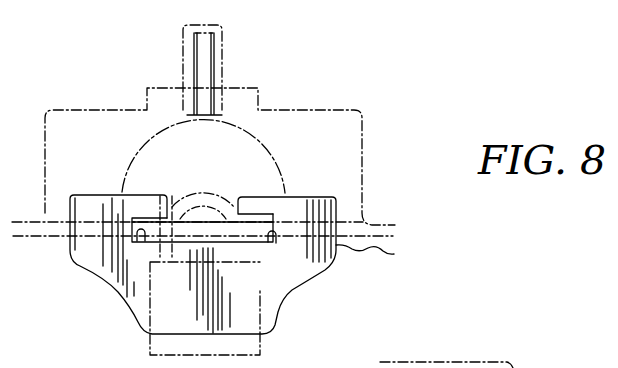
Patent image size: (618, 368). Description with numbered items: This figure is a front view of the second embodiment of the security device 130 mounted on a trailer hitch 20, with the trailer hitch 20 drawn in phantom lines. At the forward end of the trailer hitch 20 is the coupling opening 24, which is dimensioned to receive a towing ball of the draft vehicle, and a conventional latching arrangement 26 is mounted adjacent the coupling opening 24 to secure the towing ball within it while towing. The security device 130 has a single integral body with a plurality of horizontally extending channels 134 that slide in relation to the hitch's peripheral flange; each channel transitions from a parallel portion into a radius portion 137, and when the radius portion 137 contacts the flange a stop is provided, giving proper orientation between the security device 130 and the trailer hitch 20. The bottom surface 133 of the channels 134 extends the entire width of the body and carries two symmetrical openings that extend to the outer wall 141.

The trailer hitch 20 is at (350, 93).
The coupling opening 24 is at (258, 158).
The latching arrangement 26 is at (226, 56).
The security device 130 is at (346, 272).
The bottom surface 133 is at (200, 234).
The horizontally extending channels 134 is at (137, 239).
The radius portion 137 is at (234, 208).
The outer wall 141 is at (71, 246).